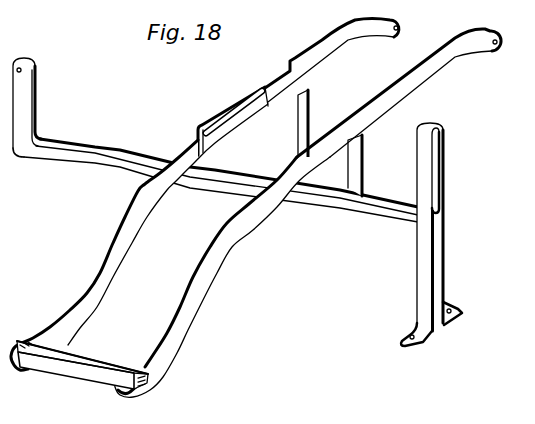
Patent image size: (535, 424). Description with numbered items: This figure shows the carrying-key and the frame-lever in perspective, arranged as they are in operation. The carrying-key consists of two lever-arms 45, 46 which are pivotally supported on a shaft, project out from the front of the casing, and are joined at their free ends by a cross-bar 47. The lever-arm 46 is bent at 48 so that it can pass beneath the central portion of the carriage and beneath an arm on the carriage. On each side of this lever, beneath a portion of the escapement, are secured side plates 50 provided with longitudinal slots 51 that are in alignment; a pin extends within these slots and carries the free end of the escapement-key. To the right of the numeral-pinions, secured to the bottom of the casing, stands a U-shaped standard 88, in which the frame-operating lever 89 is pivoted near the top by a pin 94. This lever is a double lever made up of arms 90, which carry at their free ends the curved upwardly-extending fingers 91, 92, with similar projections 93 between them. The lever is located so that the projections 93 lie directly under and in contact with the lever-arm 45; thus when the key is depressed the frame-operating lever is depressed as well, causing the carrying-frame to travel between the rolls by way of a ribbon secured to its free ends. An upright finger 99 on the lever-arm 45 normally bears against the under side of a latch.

The lever-arm 45 is at (207, 285).
The lever-arm 46 is at (118, 243).
The cross-bar 47 is at (58, 372).
The bend 48 is at (298, 65).
The side plates 50 is at (232, 111).
The longitudinal slots 51 is at (252, 88).
The U-shaped standard 88 is at (431, 234).
The frame-operating lever 89 is at (93, 152).
The arms 90 is at (339, 206).
The curved upwardly-extending finger 91 is at (451, 227).
The curved upwardly-extending finger 92 is at (22, 100).
The projections 93 is at (356, 166).
The pin 94 is at (425, 150).
The upright finger 99 is at (306, 118).